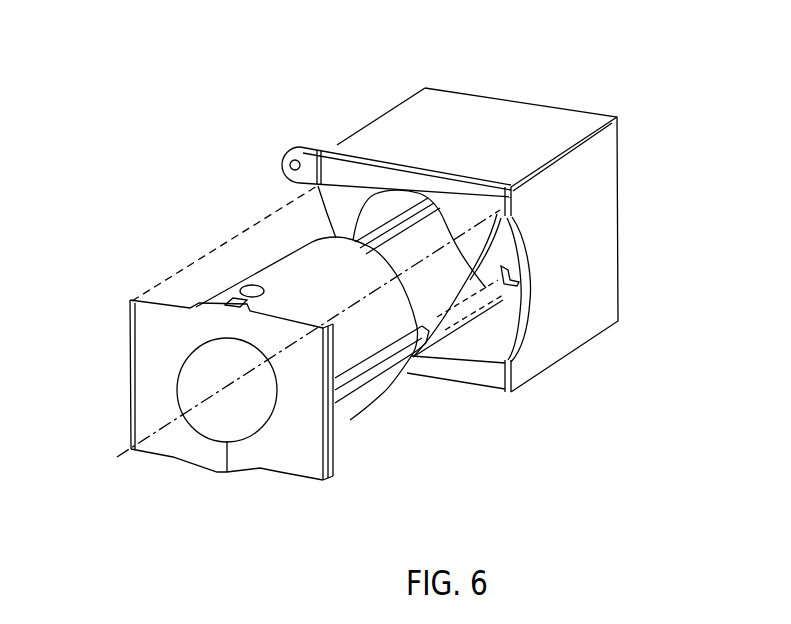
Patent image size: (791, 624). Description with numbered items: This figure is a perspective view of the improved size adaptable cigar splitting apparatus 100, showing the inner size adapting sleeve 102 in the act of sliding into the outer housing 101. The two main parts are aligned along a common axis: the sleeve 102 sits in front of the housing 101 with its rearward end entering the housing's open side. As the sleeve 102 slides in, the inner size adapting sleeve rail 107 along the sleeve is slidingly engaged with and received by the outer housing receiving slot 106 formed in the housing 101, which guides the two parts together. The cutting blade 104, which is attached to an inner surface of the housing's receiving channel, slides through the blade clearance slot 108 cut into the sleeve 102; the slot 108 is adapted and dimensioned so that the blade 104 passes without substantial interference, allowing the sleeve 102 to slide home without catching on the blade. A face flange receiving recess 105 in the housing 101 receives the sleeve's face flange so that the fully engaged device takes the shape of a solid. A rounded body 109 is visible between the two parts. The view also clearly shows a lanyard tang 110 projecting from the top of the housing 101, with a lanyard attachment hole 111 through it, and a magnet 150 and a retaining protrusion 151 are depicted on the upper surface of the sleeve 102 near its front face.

The improved size adaptable cigar splitting apparatus 100 is at (178, 110).
The outer housing 101 is at (514, 100).
The inner size adapting sleeve 102 is at (172, 455).
The cutting blade 104 is at (492, 248).
The face flange receiving recess 105 is at (531, 312).
The outer housing receiving slot 106 is at (524, 270).
The inner size adapting sleeve rail 107 is at (353, 378).
The blade clearance slot 108 is at (230, 473).
The barrel 109 is at (304, 301).
The lanyard tang 110 is at (300, 147).
The lanyard attachment hole 111 is at (283, 167).
The magnet 150 is at (241, 291).
The retaining protrusion 151 is at (200, 306).